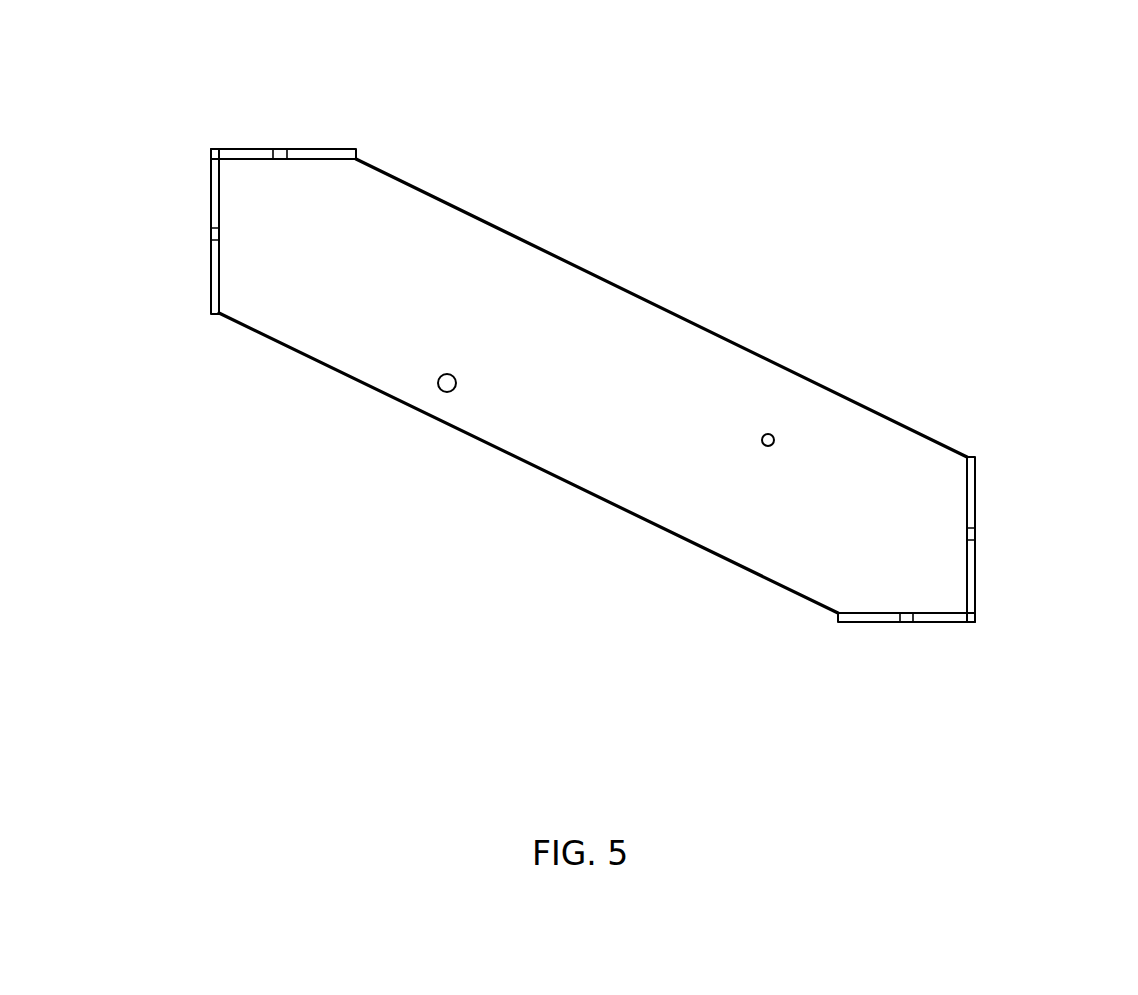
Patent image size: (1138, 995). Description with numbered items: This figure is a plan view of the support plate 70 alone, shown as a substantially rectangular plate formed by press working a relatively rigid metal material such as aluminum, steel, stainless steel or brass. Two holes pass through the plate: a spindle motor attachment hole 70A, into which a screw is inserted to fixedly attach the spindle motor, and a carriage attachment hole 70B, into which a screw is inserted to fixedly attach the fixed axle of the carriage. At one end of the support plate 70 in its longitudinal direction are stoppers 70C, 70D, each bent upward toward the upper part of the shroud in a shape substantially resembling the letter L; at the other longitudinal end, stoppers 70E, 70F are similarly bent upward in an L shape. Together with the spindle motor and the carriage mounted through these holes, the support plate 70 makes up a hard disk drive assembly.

The support plate 70 is at (633, 317).
The spindle motor attachment hole 70A is at (439, 391).
The carriage attachment hole 70B is at (770, 434).
The stopper 70C is at (213, 268).
The stopper 70D is at (248, 157).
The stopper 70E is at (872, 617).
The stopper 70F is at (972, 503).